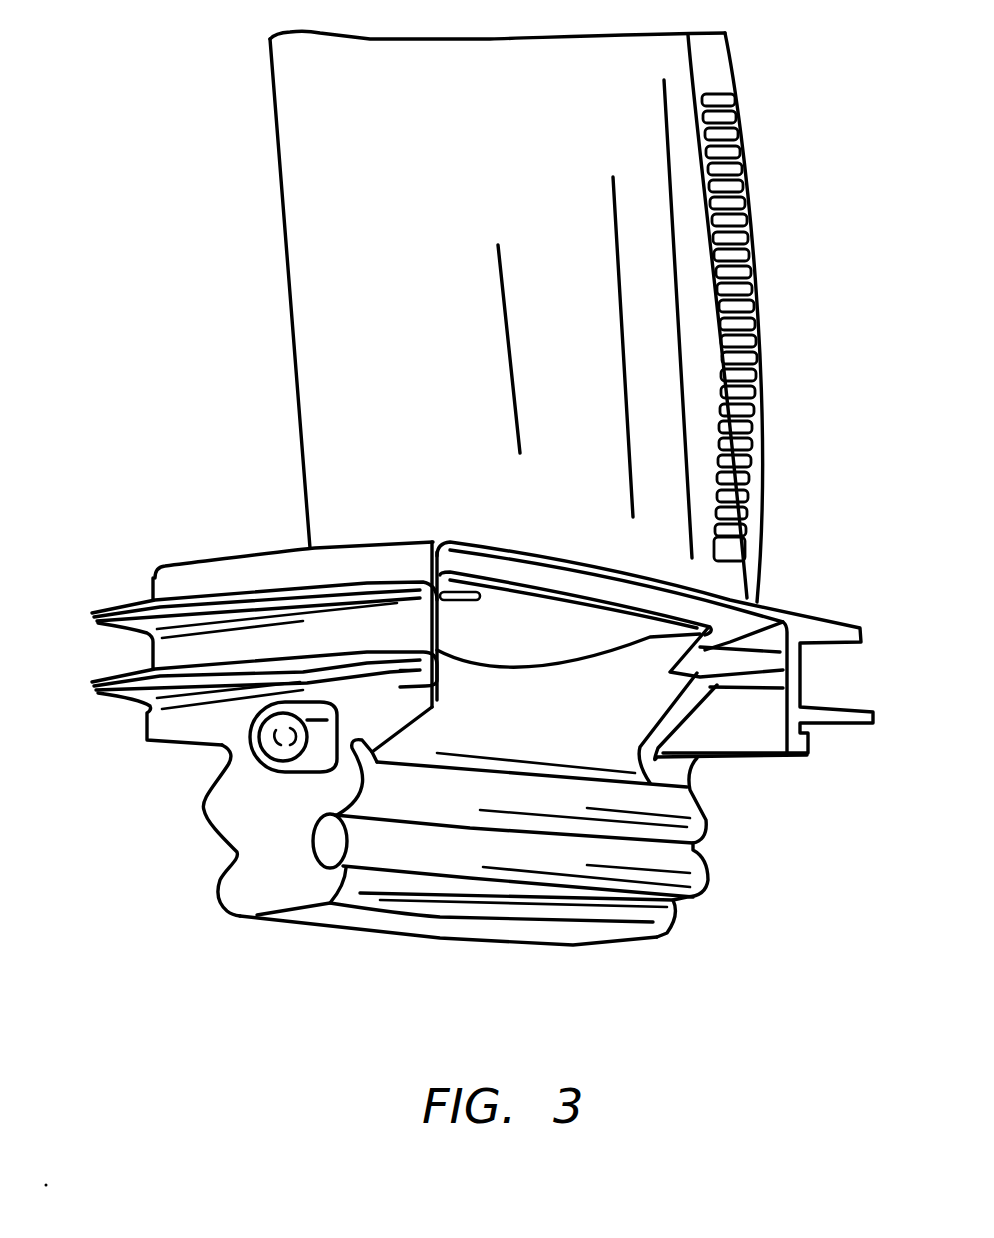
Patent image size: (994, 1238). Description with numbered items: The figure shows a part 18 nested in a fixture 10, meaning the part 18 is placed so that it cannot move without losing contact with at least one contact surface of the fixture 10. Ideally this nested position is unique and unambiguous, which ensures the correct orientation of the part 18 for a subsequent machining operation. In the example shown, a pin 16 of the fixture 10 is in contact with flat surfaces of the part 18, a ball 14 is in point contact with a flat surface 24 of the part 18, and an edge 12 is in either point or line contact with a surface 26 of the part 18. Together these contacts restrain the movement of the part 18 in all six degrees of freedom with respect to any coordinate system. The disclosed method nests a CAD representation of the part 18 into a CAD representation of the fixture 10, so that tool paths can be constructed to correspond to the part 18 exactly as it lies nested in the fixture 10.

The fixture 10 is at (462, 488).
The edge 12 is at (449, 316).
The ball 14 is at (277, 732).
The pin 16 is at (683, 862).
The part 18 is at (172, 378).
The flat surface 24 is at (325, 755).
The surface 26 is at (287, 245).